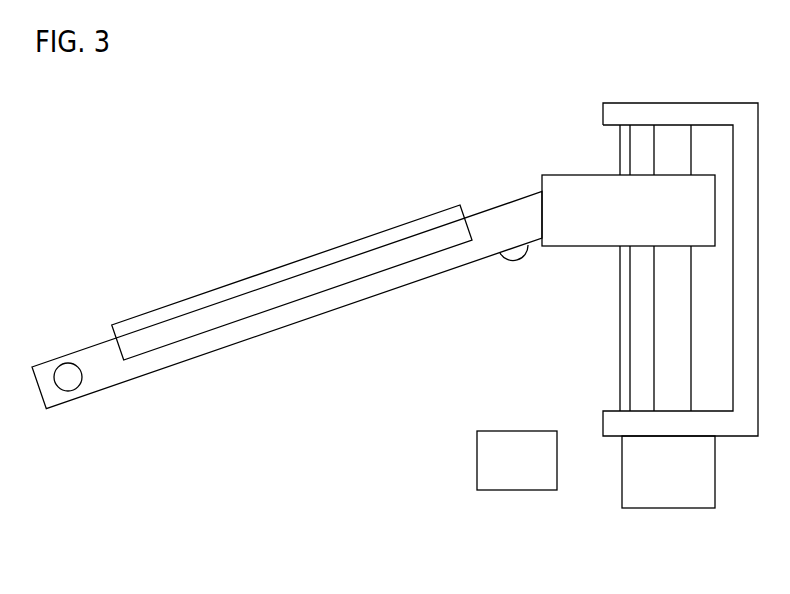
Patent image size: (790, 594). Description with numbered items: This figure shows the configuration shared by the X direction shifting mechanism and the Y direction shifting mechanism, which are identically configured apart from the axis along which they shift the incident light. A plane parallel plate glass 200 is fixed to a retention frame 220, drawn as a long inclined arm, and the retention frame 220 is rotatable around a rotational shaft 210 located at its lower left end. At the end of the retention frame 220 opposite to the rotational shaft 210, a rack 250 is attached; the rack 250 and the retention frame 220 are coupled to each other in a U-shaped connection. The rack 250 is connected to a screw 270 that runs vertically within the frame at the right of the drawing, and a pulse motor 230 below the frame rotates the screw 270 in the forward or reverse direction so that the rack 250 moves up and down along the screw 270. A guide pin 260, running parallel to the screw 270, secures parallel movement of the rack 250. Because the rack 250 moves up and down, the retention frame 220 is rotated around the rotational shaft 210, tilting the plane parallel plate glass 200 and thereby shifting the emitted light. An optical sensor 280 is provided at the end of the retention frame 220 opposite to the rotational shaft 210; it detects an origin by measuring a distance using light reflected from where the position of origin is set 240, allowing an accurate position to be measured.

The plane parallel plate glass 200 is at (285, 265).
The rotational shaft 210 is at (78, 389).
The retention frame 220 is at (293, 324).
The pulse motor 230 is at (668, 510).
The position of origin 240 is at (517, 492).
The rack 250 is at (573, 172).
The guide pin 260 is at (620, 285).
The screw 270 is at (654, 336).
The optical sensor 280 is at (512, 268).